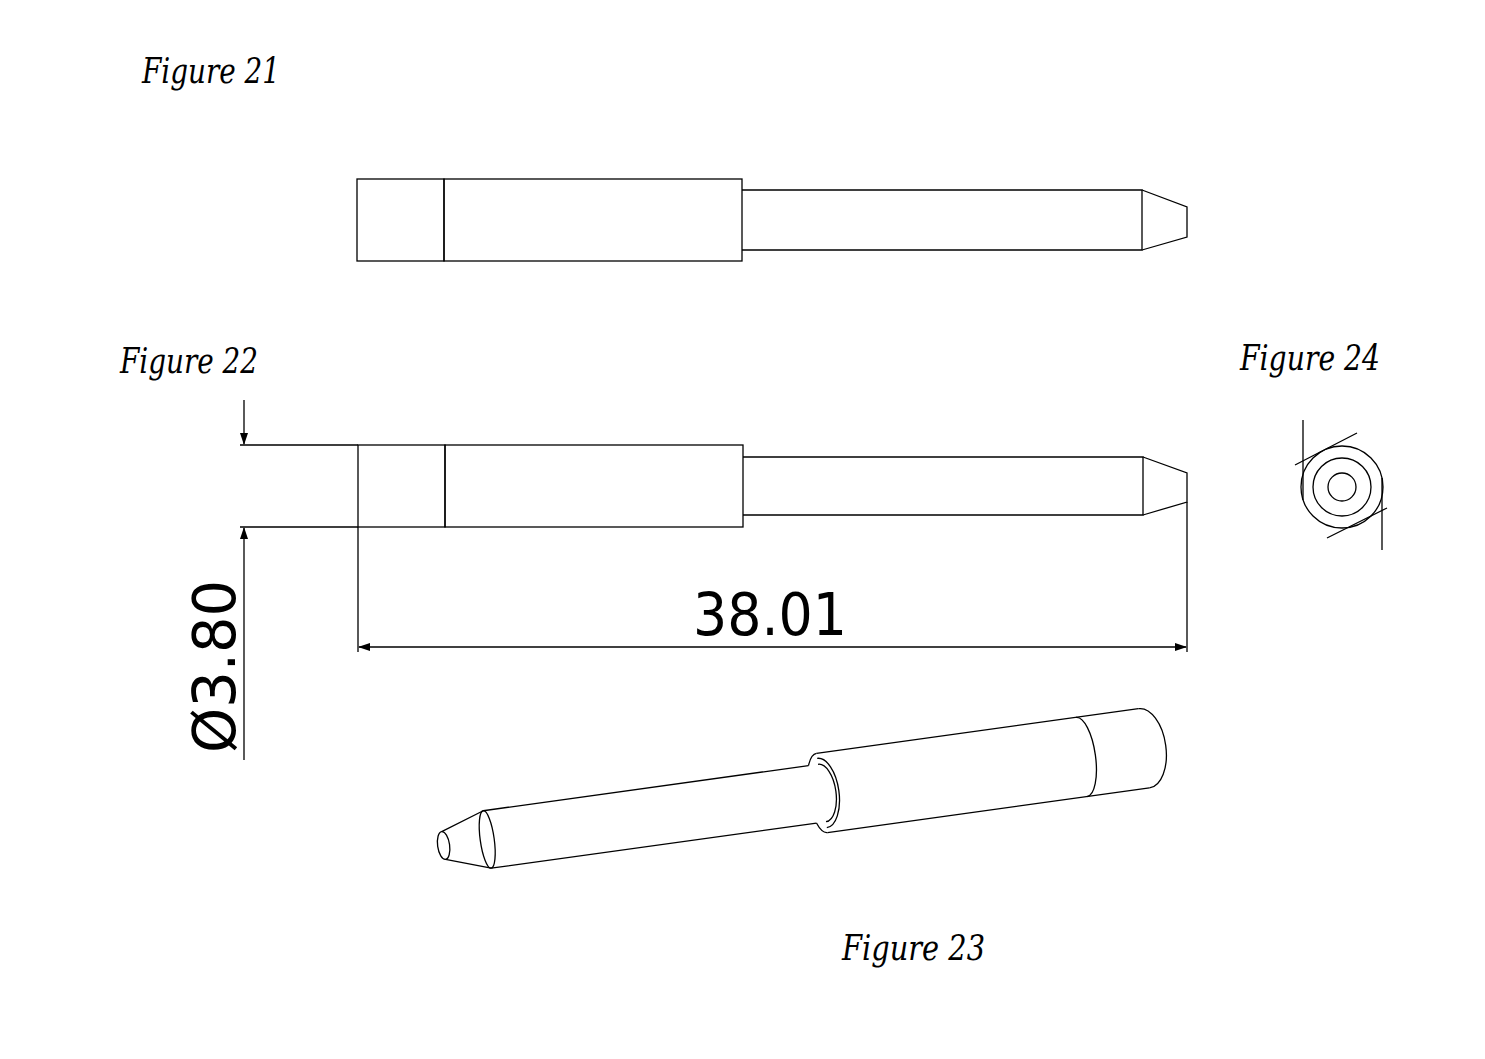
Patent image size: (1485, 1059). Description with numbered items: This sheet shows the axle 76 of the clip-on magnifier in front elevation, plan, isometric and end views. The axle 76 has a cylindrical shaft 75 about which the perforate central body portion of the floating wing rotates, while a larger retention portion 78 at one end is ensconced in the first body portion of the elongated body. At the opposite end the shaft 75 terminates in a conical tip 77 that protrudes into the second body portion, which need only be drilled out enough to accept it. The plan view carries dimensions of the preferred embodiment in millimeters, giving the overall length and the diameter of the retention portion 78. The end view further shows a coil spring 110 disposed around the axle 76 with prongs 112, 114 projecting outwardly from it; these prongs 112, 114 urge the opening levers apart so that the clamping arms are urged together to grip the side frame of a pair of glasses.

In FIG. 21, the cylindrical shaft 75 is at (853, 187).
In FIG. 22, the cylindrical shaft 75 is at (1012, 450).
In FIG. 23, the cylindrical shaft 75 is at (608, 790).
In FIG. 21, the axle 76 is at (856, 163).
In FIG. 22, the axle 76 is at (772, 453).
In FIG. 23, the axle 76 is at (729, 775).
In FIG. 24, the axle 76 is at (1344, 552).
In FIG. 21, the conical tip 77 is at (1180, 186).
In FIG. 22, the conical tip 77 is at (1162, 523).
In FIG. 23, the conical tip 77 is at (445, 884).
In FIG. 21, the retention portion 78 is at (601, 173).
In FIG. 22, the retention portion 78 is at (565, 435).
In FIG. 23, the retention portion 78 is at (858, 745).
In FIG. 24, the coil spring 110 is at (1364, 445).
In FIG. 24, the prong 112 is at (1295, 430).
In FIG. 24, the prong 114 is at (1328, 441).